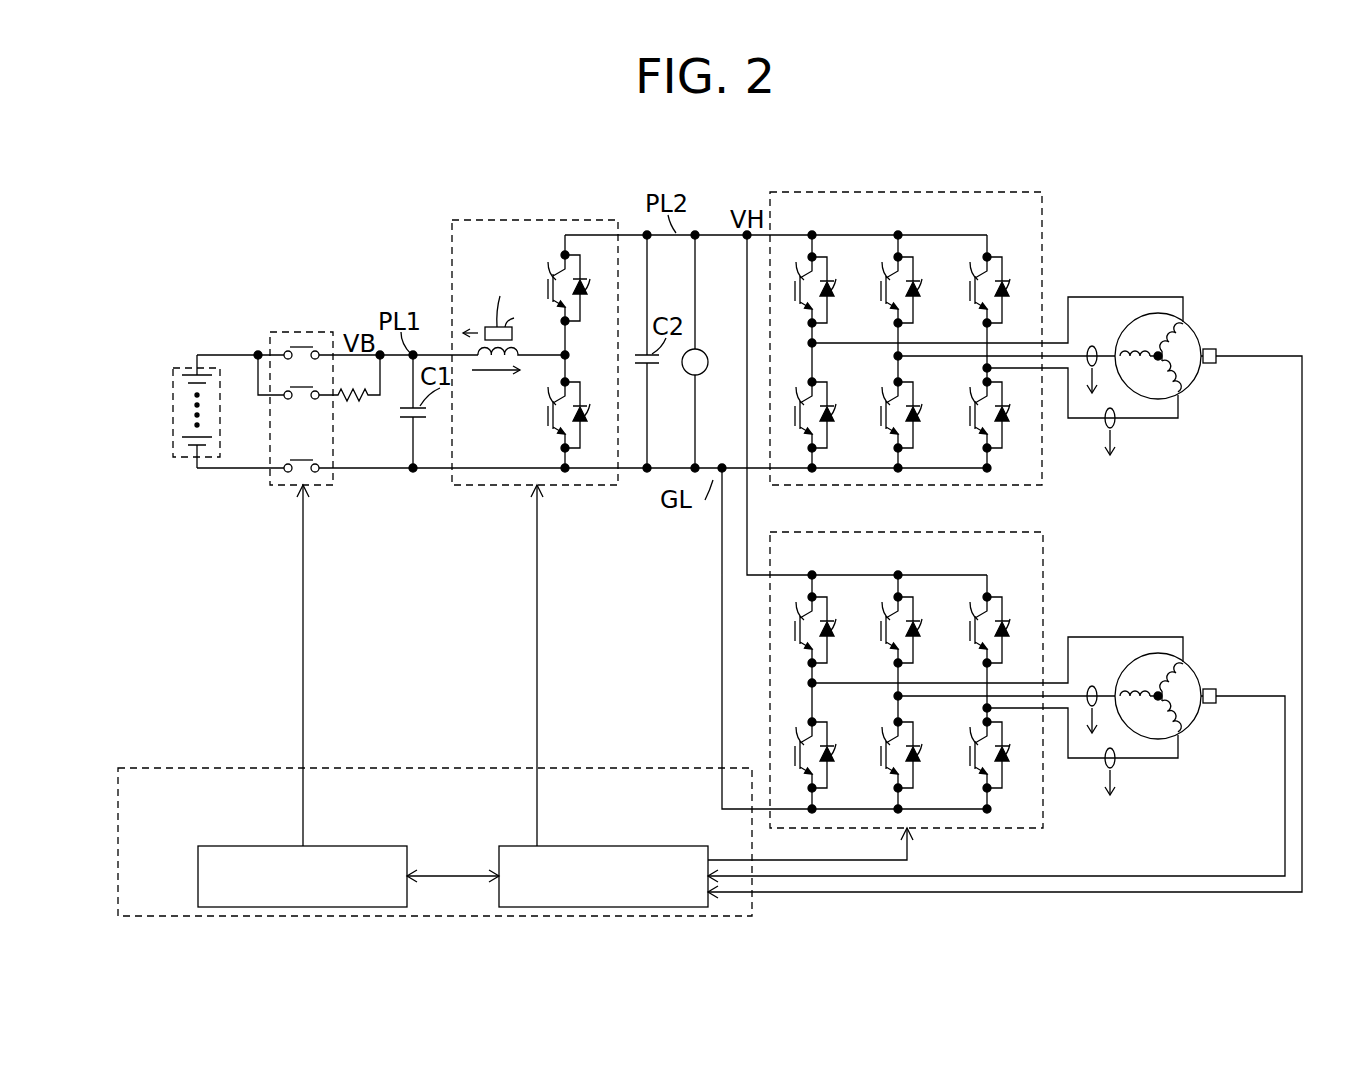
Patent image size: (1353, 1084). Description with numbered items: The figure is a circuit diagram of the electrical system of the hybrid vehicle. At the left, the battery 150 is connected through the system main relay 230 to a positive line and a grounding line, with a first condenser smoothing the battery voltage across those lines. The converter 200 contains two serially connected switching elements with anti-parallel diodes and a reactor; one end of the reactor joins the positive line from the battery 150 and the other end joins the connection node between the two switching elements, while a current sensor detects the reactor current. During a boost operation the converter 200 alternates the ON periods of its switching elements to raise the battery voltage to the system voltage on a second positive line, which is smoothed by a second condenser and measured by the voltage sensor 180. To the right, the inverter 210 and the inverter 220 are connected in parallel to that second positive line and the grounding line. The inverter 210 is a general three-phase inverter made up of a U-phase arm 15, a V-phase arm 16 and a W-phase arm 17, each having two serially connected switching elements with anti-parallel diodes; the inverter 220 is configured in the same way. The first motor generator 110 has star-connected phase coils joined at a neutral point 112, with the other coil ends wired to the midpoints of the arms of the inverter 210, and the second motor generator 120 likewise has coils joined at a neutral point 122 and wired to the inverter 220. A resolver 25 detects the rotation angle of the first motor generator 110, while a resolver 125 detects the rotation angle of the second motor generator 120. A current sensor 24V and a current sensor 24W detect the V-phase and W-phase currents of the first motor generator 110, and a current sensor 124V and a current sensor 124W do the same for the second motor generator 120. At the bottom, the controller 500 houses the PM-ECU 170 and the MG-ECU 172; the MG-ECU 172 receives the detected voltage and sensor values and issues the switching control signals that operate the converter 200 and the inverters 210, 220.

The battery 150 is at (183, 365).
The system main relay 230 is at (301, 332).
The converter 200 is at (571, 223).
The voltage sensor 180 is at (710, 360).
The inverter 210 is at (995, 192).
The inverter 220 is at (995, 532).
The U-phase arm 15 is at (824, 506).
The V-phase arm 16 is at (909, 506).
The W-phase arm 17 is at (997, 506).
The first motor generator 110 is at (1185, 388).
The neutral point 112 is at (1158, 352).
The current sensor 24V is at (1094, 345).
The current sensor 24W is at (1116, 422).
The resolver 25 is at (1215, 350).
The second motor generator 120 is at (1185, 728).
The neutral point 122 is at (1158, 692).
The current sensor 124V is at (1094, 685).
The current sensor 124W is at (1116, 762).
The resolver 125 is at (1215, 690).
The controller 500 is at (162, 766).
The power management-electronic control unit 170 is at (352, 846).
The motor generator-ECU 172 is at (595, 846).